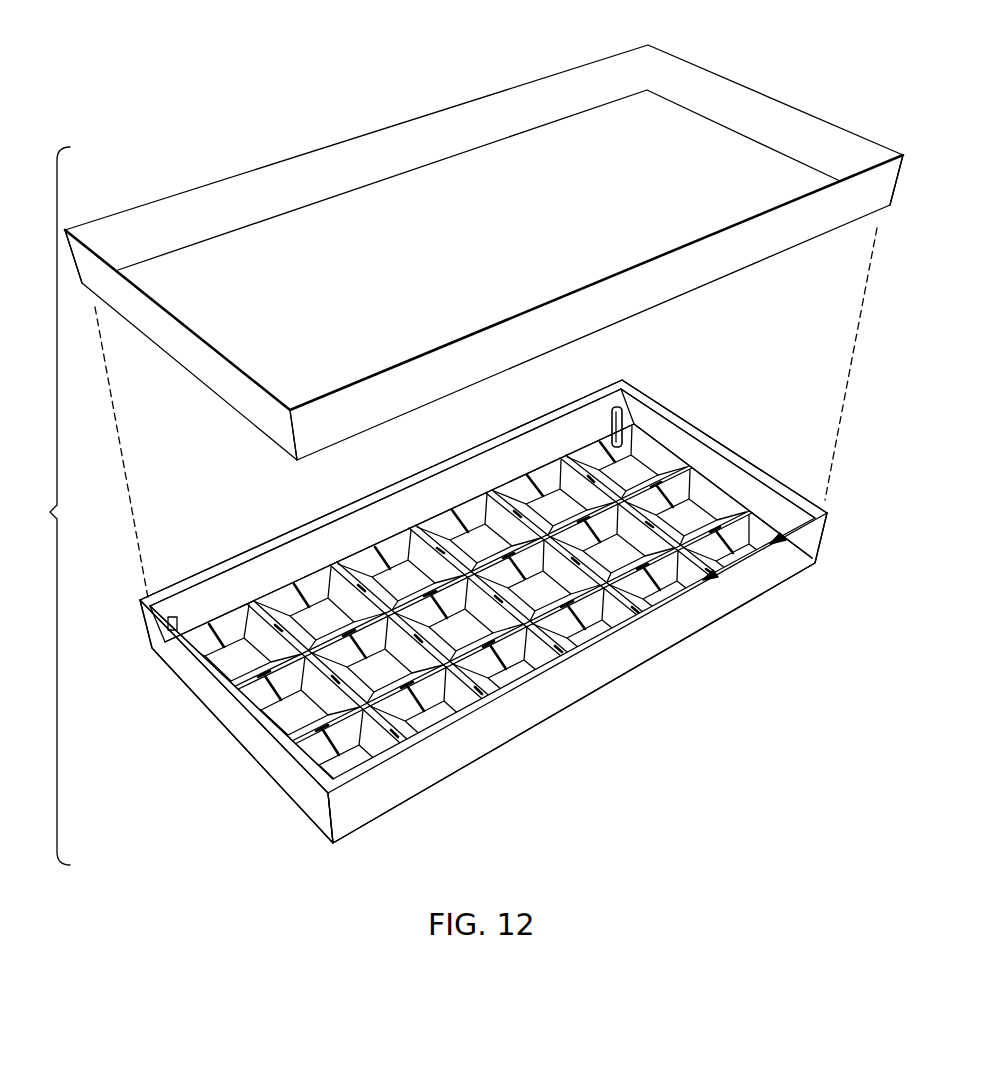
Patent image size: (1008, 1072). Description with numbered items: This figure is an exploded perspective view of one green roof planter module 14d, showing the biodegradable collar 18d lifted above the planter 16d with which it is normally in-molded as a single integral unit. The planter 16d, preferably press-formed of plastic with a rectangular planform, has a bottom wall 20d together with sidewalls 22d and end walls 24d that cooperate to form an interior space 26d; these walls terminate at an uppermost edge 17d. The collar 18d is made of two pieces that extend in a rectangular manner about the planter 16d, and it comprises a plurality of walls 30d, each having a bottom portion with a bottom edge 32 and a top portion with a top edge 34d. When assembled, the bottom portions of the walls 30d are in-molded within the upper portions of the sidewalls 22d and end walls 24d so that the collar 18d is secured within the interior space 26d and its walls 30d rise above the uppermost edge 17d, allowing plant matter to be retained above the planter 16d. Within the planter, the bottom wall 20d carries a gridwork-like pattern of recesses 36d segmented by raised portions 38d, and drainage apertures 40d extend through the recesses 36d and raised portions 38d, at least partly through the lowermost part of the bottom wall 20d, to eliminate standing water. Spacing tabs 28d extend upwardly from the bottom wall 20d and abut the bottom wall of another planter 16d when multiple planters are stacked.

The planter module 14d is at (47, 506).
The planter 16d is at (459, 595).
The uppermost edge 17d is at (237, 548).
The biodegradable collar 18d is at (484, 244).
The bottom wall 20d is at (300, 582).
The sidewalls 22d is at (507, 717).
The end walls 24d is at (285, 763).
The interior space 26d is at (662, 449).
The spacing tabs 28d is at (626, 412).
The walls 30d is at (740, 107).
The inner wall edge 32 is at (230, 570).
The top edge 34d is at (432, 108).
The recesses 36d is at (468, 540).
The raised portions 38d is at (490, 517).
The drainage apertures 40d is at (527, 495).